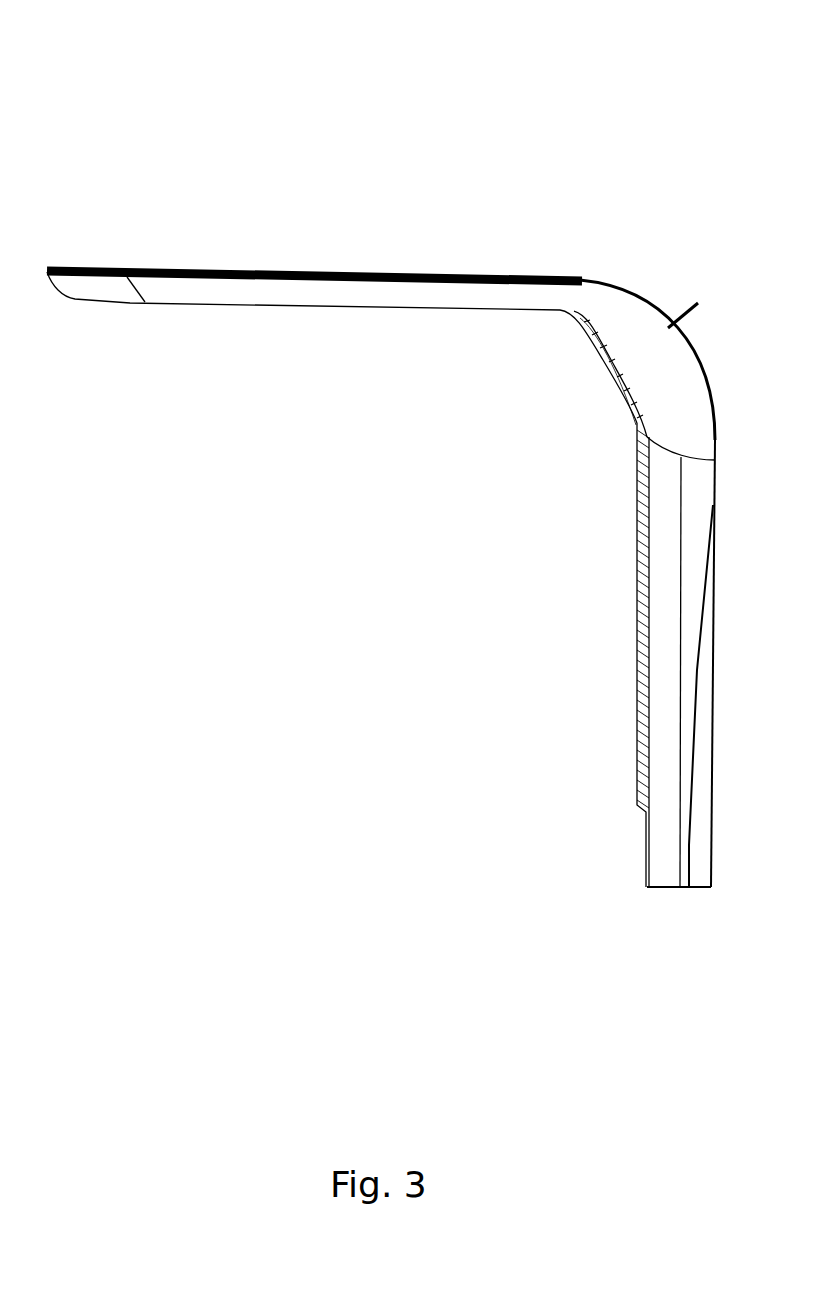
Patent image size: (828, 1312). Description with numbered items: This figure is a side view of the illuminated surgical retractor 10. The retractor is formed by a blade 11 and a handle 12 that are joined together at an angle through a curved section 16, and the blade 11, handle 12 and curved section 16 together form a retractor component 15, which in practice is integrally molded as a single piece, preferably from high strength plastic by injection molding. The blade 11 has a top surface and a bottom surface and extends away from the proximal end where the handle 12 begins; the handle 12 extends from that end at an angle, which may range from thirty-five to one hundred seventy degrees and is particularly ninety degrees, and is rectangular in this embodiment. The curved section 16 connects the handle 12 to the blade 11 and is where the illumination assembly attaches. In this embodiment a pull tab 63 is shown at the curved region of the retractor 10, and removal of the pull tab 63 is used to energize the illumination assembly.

The illuminated surgical retractor 10 is at (55, 42).
The blade 11 is at (483, 312).
The handle 12 is at (658, 507).
The retractor component 15 is at (462, 403).
The curved section 16 is at (640, 390).
The pull tab 63 is at (683, 305).